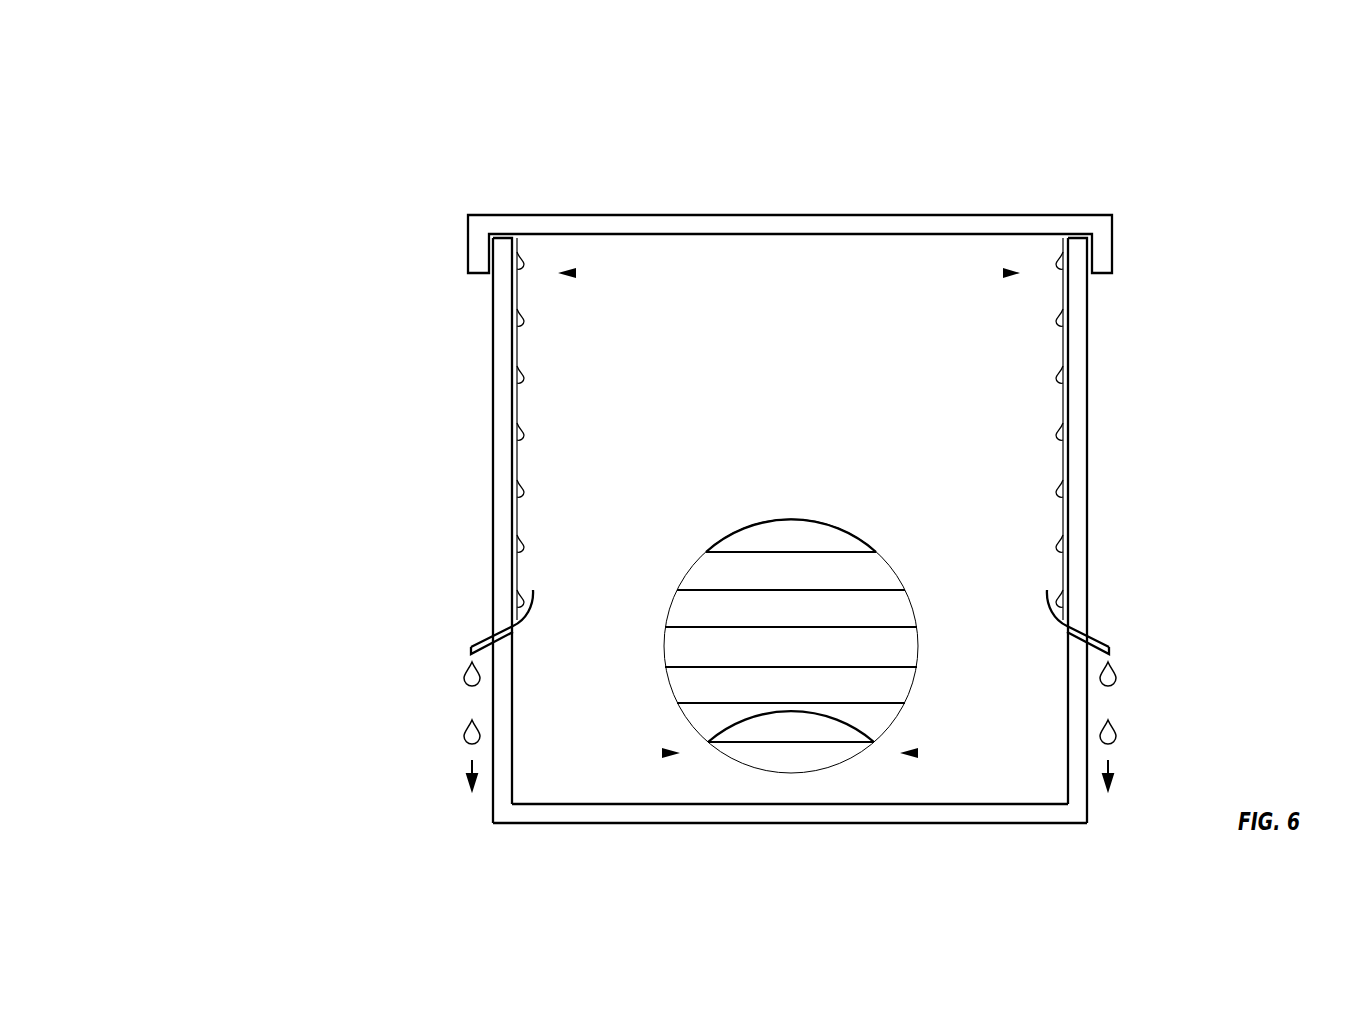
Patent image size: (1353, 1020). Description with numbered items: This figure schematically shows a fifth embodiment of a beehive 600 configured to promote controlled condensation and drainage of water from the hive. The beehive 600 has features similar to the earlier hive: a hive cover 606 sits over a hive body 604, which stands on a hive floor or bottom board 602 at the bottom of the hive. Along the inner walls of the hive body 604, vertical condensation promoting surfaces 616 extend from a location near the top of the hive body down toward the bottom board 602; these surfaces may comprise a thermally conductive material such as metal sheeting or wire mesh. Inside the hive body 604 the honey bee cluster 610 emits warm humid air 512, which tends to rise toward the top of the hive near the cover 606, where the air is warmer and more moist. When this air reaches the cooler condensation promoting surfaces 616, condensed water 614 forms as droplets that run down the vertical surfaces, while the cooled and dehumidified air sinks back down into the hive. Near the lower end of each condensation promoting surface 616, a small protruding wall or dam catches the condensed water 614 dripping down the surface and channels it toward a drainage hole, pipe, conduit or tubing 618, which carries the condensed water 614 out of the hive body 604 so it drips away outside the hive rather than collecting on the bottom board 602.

The beehive 600 is at (824, 44).
The hive cover 606 is at (455, 230).
The hive body 604 is at (490, 421).
The hive bottom board 602 is at (483, 818).
The condensation promoting surface 616 is at (517, 300).
The drainage hole, pipe, conduit or tubing 618 is at (458, 648).
The condensed water 614 is at (517, 491).
The honey bee cluster 610 is at (791, 646).
The air 512 is at (850, 325).